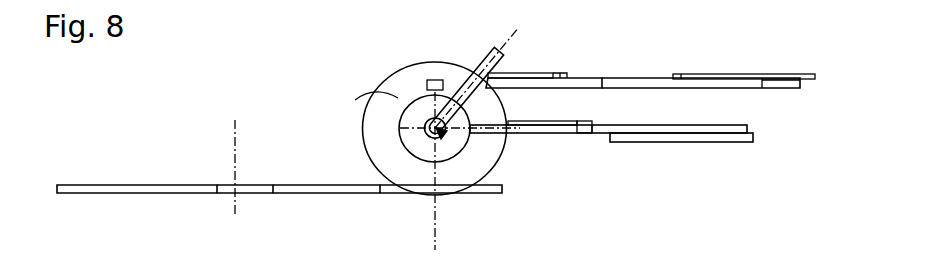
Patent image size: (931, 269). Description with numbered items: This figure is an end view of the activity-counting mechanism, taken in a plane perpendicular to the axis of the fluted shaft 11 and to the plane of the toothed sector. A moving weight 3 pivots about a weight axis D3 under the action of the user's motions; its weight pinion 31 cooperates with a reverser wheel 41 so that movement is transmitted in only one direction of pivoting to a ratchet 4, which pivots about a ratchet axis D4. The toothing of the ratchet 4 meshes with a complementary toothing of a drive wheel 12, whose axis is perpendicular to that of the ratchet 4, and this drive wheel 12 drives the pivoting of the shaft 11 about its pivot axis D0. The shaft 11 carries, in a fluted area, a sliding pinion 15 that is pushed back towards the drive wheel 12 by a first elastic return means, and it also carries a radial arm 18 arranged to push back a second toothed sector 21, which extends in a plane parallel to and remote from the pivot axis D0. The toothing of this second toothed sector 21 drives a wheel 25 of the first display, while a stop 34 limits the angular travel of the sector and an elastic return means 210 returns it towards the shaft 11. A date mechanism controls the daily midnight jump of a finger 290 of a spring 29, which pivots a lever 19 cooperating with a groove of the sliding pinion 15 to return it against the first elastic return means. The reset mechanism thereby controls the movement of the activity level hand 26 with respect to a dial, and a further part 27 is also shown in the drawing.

The weight 3 is at (195, 190).
The weight pinion 31 is at (258, 190).
The reverser wheel 41 is at (323, 190).
The ratchet 4 is at (392, 190).
The shaft 11 is at (423, 129).
The drive wheel 12 is at (387, 153).
The sliding pinion 15 is at (398, 109).
The radial arm 18 is at (398, 98).
The stop 34 is at (434, 80).
The lever 19 is at (550, 128).
The second toothed sector 21 is at (577, 85).
The elastic return means 210 is at (530, 77).
The spring 29 is at (657, 128).
The finger 290 is at (585, 128).
The wheel 25 is at (768, 82).
The activity level hand 26 is at (788, 77).
The lower strip 27 is at (718, 137).
The pivot axis D0 is at (448, 132).
The weight axis D3 is at (235, 147).
The ratchet axis D4 is at (436, 222).